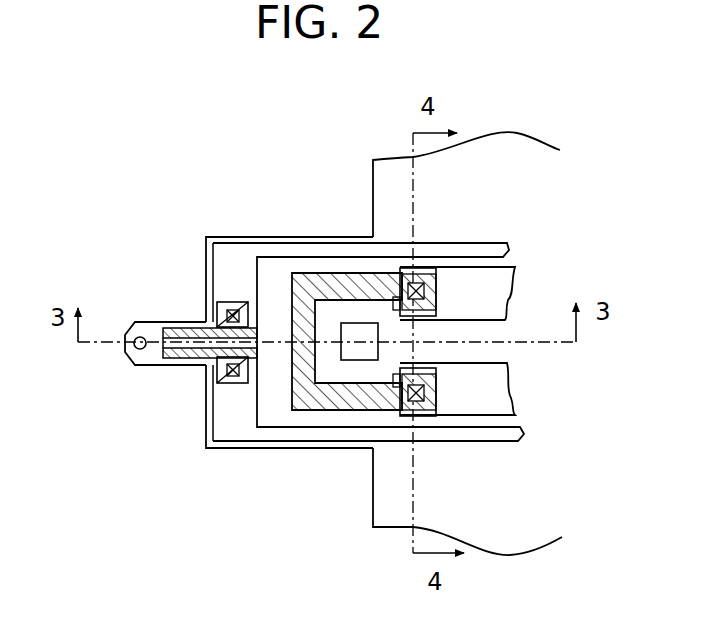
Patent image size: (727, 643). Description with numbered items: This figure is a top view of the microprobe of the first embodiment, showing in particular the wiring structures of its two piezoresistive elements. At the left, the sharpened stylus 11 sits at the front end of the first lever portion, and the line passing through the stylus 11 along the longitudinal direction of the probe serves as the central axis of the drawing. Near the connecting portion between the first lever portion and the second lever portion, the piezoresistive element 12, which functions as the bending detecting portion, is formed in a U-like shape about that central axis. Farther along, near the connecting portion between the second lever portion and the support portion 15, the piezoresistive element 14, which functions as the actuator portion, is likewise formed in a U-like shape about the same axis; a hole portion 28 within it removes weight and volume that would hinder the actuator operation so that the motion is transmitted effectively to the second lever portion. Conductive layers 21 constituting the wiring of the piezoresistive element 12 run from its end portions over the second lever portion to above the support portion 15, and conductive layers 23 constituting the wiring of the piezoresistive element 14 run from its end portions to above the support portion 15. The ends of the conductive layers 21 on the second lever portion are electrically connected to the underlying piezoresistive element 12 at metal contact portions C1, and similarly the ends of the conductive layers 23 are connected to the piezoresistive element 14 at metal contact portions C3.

The stylus 11 is at (136, 331).
The piezoresistive element 12 is at (173, 323).
The piezoresistive element 14 is at (312, 272).
The support portion 15 is at (492, 157).
The conductive layers 21 is at (247, 256).
The conductive layers 23 is at (503, 282).
The hole portion 28 is at (361, 325).
The metal contact portions C1 is at (227, 302).
The metal contact portions C3 is at (432, 268).